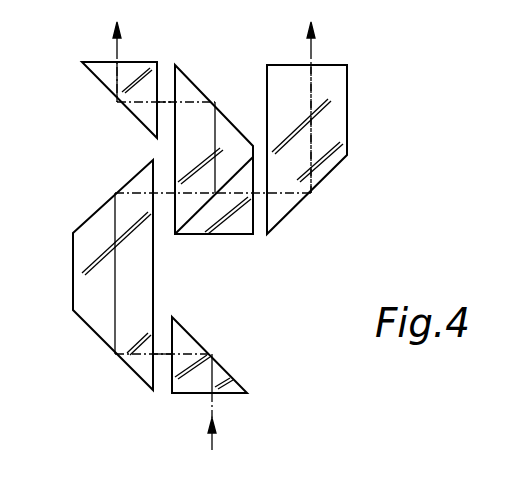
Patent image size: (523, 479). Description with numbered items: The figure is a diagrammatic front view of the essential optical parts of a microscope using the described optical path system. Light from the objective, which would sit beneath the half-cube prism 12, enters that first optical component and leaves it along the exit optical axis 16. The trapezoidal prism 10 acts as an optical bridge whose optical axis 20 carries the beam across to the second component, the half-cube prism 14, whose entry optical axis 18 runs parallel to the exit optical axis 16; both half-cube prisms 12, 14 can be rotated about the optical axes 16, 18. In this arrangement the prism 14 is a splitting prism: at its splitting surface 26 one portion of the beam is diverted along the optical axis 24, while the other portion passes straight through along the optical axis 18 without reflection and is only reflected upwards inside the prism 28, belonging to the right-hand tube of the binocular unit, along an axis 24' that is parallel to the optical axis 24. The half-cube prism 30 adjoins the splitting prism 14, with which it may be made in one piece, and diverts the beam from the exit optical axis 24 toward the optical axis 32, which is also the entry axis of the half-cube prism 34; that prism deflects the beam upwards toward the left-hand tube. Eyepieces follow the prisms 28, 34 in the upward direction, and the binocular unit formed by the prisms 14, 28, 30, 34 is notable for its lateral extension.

The trapezoidal prism 10 is at (82, 245).
The half-cube prism 12 is at (227, 387).
The half-cube prism 14 is at (207, 218).
The exit optical axis 16 is at (163, 355).
The entry optical axis 18 is at (157, 200).
The optical axis 20 is at (112, 308).
The optical axis 24 is at (214, 128).
The axis 24' is at (340, 107).
The splitting surface 26 is at (236, 178).
The prism 28 is at (333, 120).
The half-cube prism 30 is at (196, 85).
The optical axis 32 is at (162, 100).
The half-cube prism 34 is at (105, 78).